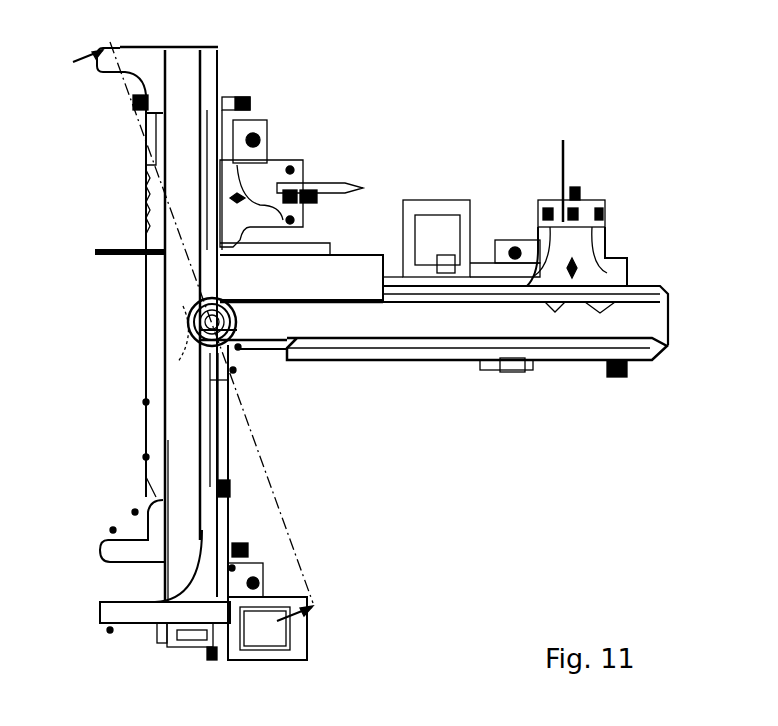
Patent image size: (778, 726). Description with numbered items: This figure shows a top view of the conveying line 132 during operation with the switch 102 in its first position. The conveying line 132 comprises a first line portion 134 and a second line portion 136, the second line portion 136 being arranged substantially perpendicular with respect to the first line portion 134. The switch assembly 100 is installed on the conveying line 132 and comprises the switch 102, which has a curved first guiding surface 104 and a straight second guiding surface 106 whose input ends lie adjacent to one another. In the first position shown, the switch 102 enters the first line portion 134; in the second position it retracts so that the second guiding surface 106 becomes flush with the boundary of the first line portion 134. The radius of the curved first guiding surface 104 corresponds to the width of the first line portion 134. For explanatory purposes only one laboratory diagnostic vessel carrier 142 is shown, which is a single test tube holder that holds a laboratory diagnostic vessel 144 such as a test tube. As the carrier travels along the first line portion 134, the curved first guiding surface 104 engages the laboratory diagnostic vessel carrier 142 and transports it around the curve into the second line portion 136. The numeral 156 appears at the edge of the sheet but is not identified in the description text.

The conveying line 132 is at (657, 171).
The first line portion 134 is at (180, 160).
The second guiding surface 106 is at (167, 290).
The curved first guiding surface 104 is at (178, 360).
The laboratory diagnostic vessel 144 is at (187, 308).
The laboratory diagnostic vessel carrier 142 is at (250, 343).
The switch assembly 100 is at (363, 273).
The switch 102 is at (444, 242).
The second line portion 136 is at (562, 327).
The element 156 is at (316, 719).